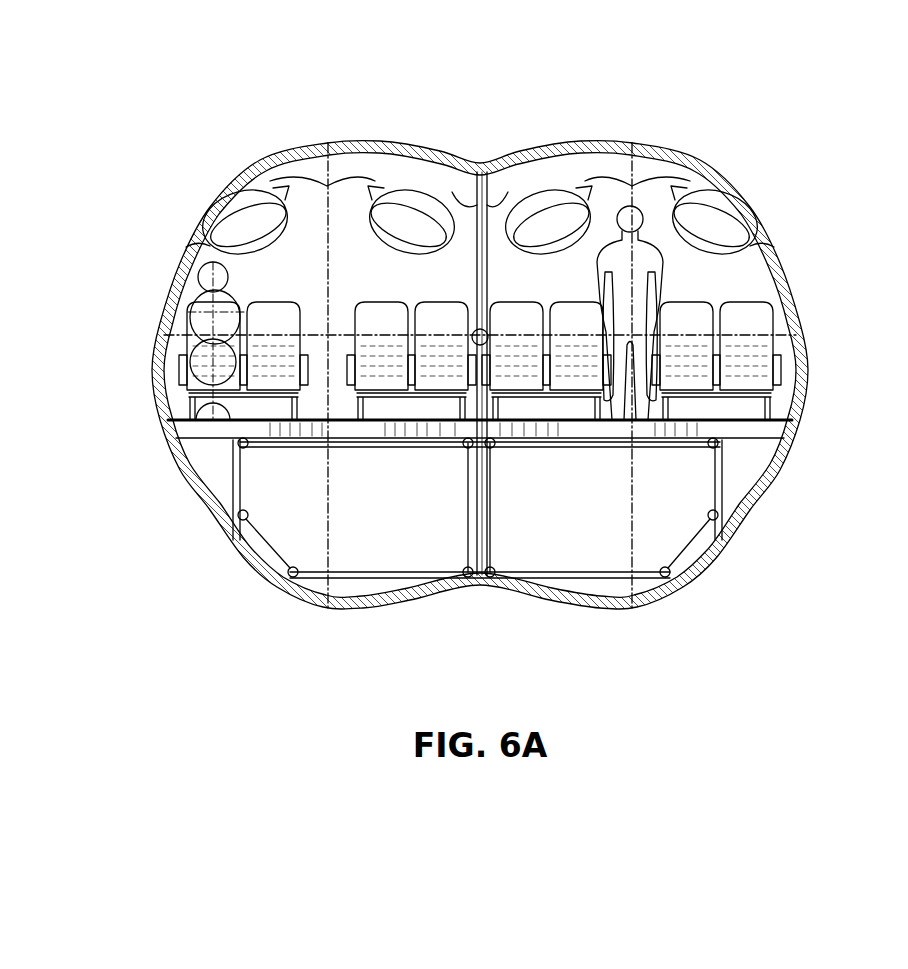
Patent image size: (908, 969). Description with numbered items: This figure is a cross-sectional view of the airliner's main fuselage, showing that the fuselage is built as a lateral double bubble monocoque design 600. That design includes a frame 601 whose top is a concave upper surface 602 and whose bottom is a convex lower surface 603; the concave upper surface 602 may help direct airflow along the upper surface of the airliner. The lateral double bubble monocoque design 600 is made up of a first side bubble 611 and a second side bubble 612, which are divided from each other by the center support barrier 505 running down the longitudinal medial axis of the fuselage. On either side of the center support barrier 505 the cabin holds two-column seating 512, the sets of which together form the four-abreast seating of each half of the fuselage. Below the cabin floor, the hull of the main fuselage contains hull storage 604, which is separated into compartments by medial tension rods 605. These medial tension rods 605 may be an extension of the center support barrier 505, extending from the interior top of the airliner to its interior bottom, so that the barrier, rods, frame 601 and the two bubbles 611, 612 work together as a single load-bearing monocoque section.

The lateral double bubble monocoque design 600 is at (231, 177).
The frame 601 is at (182, 241).
The concave upper surface 602 is at (496, 175).
The convex lower surface 603 is at (468, 587).
The hull storage 604 is at (317, 512).
The medial tension rods 605 is at (481, 519).
The center support barrier 505 is at (462, 178).
The two-column seating 512 is at (748, 318).
The first side bubble 611 is at (156, 386).
The second side bubble 612 is at (800, 323).